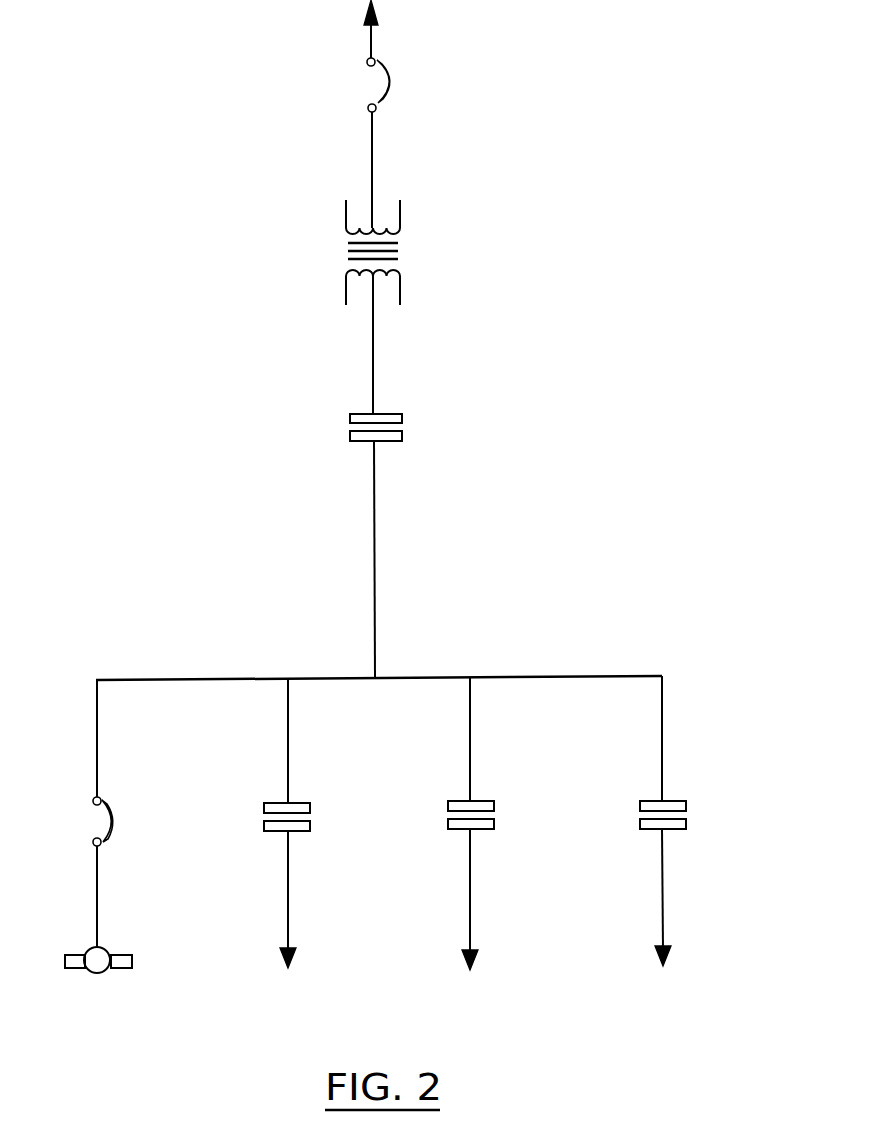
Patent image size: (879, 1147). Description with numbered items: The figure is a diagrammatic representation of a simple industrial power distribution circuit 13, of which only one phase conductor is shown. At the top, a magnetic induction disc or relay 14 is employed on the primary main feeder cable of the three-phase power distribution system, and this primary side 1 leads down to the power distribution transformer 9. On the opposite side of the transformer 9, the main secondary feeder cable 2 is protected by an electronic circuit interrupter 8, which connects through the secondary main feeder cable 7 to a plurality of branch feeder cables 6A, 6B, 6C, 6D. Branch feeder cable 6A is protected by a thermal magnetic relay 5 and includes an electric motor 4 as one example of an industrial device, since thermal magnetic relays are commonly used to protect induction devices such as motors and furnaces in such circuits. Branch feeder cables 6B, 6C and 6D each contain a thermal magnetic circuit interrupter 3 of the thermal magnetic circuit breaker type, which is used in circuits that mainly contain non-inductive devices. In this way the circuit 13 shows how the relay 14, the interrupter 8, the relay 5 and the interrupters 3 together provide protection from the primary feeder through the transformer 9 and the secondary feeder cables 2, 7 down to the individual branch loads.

The high voltage supply line 1 is at (372, 163).
The main secondary feeder cable 2 is at (373, 350).
The thermal magnetic circuit interrupter 3 is at (296, 802).
The electric motor 4 is at (98, 903).
The thermal magnetic relay 5 is at (114, 812).
The branch feeder cable 6A is at (98, 721).
The branch feeder cable 6B is at (290, 724).
The branch feeder cable 6C is at (472, 729).
The branch feeder cable 6D is at (664, 729).
The secondary main feeder cable 7 is at (375, 592).
The electronic circuit interrupter 8 is at (453, 437).
The power distribution transformer 9 is at (414, 256).
The industrial power distribution circuit 13 is at (806, 938).
The magnetic induction disc or relay 14 is at (446, 100).